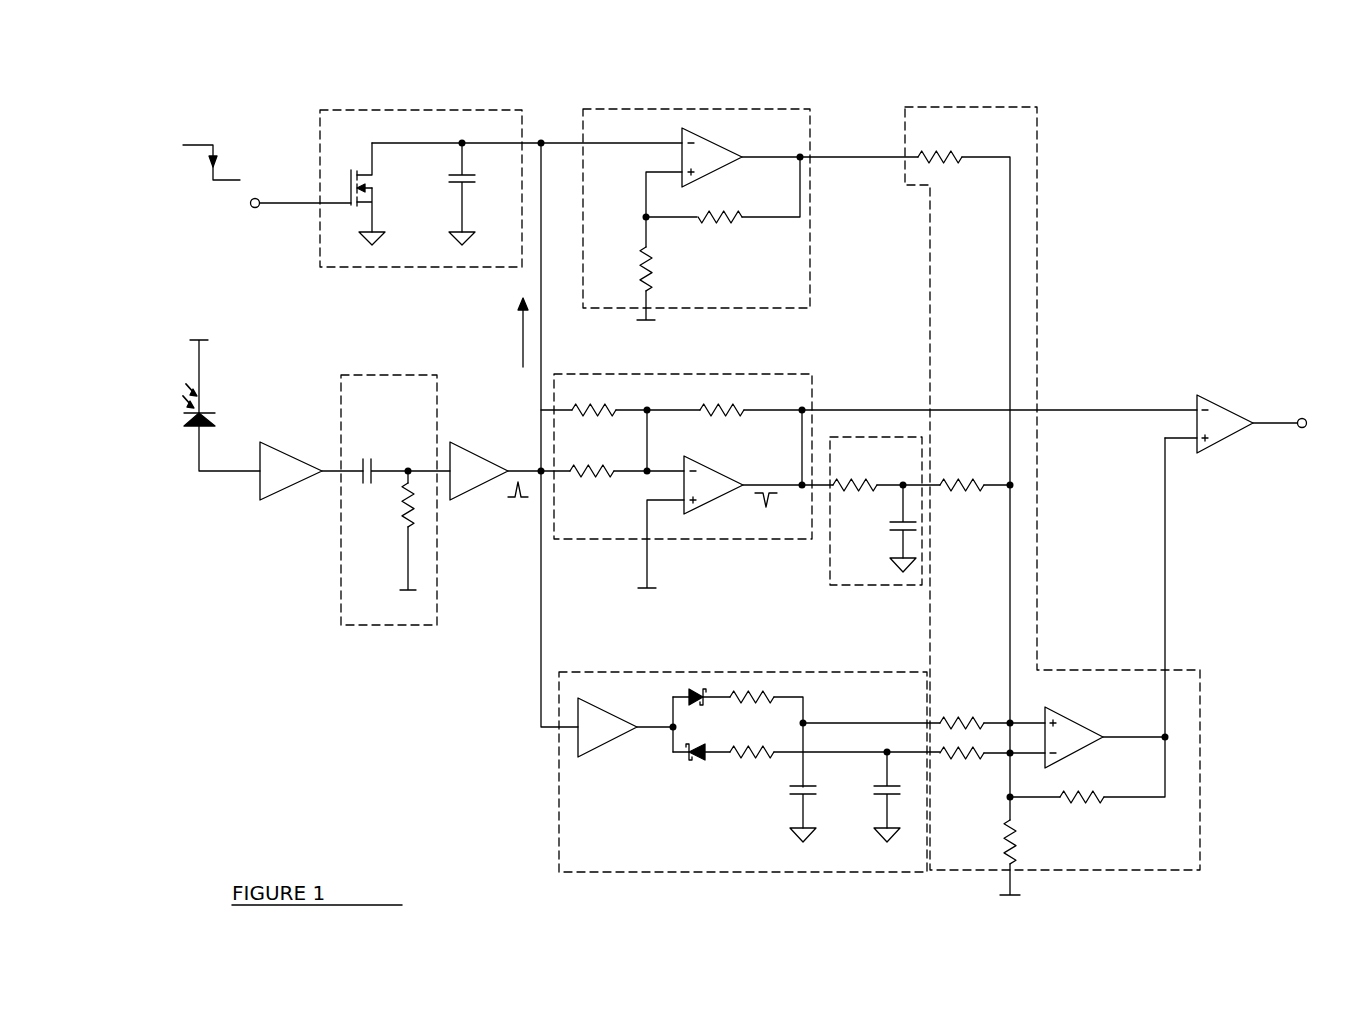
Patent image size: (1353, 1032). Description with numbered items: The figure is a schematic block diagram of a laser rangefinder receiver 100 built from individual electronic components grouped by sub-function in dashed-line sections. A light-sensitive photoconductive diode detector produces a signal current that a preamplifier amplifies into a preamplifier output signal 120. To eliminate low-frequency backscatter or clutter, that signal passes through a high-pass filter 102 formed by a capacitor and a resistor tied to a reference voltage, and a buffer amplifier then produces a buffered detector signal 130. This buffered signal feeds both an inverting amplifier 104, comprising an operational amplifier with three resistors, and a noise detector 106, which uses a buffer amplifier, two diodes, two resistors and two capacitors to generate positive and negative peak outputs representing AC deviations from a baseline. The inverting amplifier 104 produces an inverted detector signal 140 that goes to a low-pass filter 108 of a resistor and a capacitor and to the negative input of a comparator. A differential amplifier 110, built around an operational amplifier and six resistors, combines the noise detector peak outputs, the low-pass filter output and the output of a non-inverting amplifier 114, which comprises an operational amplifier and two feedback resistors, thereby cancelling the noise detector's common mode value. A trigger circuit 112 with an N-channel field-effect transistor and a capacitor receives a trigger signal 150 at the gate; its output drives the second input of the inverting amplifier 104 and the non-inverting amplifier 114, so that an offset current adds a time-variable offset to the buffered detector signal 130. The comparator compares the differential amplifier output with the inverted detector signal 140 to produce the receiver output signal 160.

The laser rangefinder receiver 100 is at (1150, 133).
The high-pass filter 102 is at (408, 375).
The inverting amplifier 104 is at (805, 374).
The noise detector 106 is at (730, 672).
The low-pass filter 108 is at (830, 551).
The differential amplifier 110 is at (1142, 670).
The trigger circuit 112 is at (433, 110).
The non-inverting amplifier 114 is at (750, 109).
The preamplifier output signal 120 is at (332, 470).
The buffered detector signal 130 is at (534, 470).
The inverted detector signal 140 is at (882, 410).
The trigger signal 150 is at (305, 204).
The receiver output signal 160 is at (1295, 430).